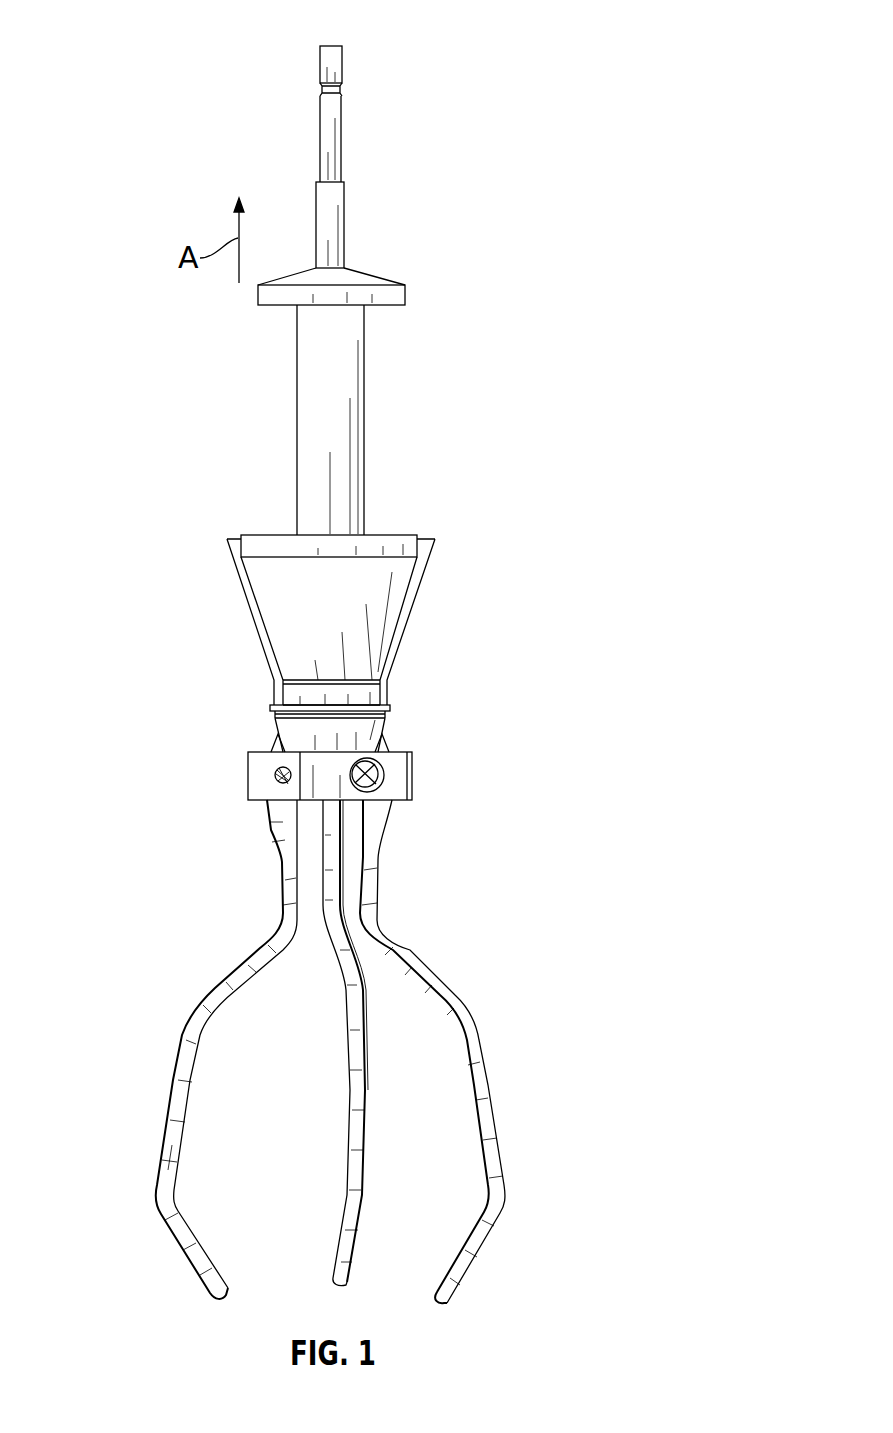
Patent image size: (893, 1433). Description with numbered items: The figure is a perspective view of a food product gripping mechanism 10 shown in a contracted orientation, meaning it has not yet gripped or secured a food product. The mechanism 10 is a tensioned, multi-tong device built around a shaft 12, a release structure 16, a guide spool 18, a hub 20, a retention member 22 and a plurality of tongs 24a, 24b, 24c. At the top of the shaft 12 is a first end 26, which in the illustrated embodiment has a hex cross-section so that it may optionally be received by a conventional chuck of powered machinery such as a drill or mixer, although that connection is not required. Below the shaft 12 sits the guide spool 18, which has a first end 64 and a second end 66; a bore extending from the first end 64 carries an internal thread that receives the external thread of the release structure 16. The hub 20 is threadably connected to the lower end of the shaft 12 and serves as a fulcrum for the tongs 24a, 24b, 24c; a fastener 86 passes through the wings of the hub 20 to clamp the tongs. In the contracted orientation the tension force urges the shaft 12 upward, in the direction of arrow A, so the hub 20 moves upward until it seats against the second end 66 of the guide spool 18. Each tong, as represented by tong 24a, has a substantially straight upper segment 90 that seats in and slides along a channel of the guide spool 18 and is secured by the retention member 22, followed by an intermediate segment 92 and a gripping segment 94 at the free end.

The mechanism 10 is at (450, 26).
The shaft 12 is at (345, 192).
The release structure 16 is at (364, 380).
The guide spool 18 is at (372, 588).
The hub 20 is at (412, 778).
The retention member 22 is at (388, 708).
The tong 24a is at (456, 1002).
The tong 24b is at (168, 1105).
The tong 24c is at (347, 1118).
The first end 26 is at (343, 58).
The first end 64 is at (390, 532).
The second end 66 is at (298, 760).
The fastener 86 is at (281, 781).
The upper segment 90 is at (231, 560).
The intermediate segment 92 is at (270, 822).
The gripping segment 94 is at (173, 1145).